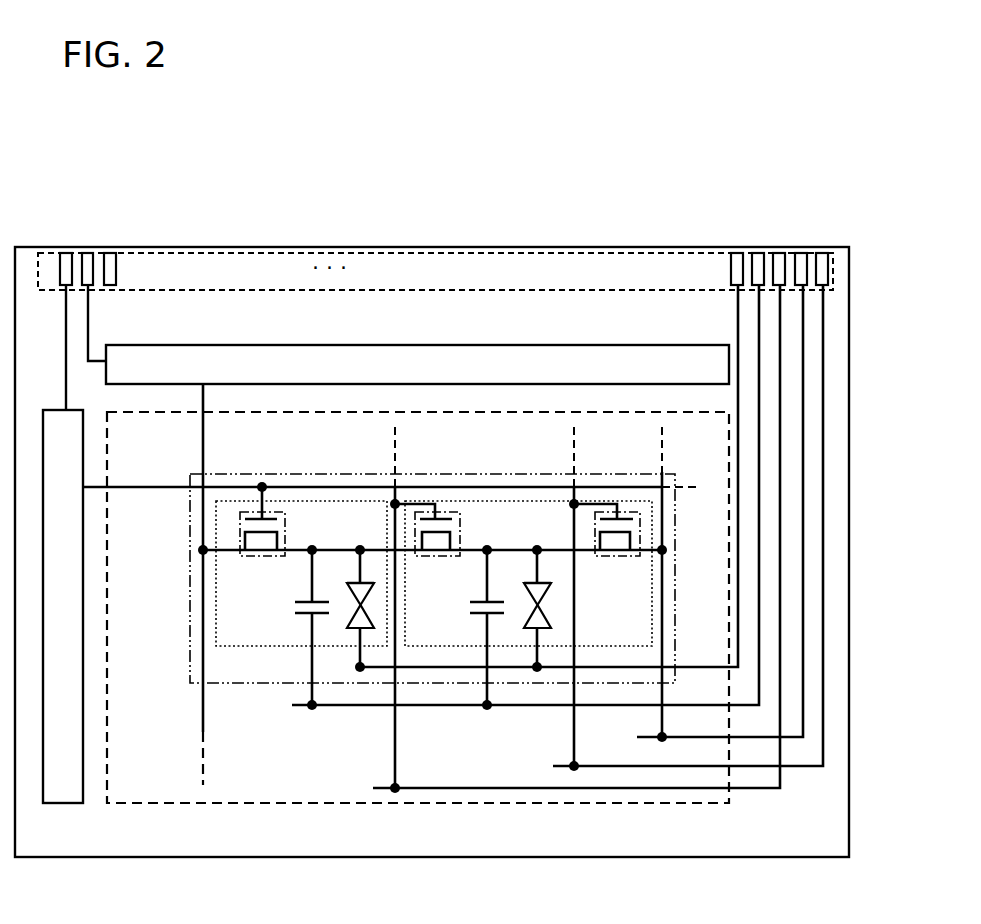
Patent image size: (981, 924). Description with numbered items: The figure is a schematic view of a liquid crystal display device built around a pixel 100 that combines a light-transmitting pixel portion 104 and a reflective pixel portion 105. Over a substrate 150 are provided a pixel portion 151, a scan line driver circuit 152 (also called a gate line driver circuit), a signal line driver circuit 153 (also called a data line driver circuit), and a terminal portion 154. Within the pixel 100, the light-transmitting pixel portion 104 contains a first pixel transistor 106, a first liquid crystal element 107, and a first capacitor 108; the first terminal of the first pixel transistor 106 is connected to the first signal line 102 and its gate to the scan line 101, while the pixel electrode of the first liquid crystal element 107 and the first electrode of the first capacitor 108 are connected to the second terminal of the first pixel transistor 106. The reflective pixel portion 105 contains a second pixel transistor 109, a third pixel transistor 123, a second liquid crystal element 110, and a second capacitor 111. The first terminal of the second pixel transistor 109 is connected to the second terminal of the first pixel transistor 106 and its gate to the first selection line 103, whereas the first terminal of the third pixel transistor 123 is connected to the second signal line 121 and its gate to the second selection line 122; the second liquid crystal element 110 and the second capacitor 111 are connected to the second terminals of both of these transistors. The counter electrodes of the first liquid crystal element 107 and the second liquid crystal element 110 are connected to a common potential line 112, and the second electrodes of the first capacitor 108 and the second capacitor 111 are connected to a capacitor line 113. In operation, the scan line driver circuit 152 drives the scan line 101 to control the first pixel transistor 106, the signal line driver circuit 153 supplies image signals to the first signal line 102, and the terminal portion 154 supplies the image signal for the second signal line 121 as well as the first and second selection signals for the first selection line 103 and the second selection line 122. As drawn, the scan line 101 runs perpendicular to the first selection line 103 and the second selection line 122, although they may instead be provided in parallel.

The pixel 100 is at (668, 549).
The scan line 101 is at (154, 489).
The first signal line 102 is at (202, 455).
The first selection line 103 is at (396, 475).
The light-transmitting pixel portion 104 is at (216, 592).
The reflective pixel portion 105 is at (652, 631).
The first pixel transistor 106 is at (282, 511).
The first liquid crystal element 107 is at (357, 632).
The first capacitor 108 is at (313, 597).
The second pixel transistor 109 is at (454, 512).
The second liquid crystal element 110 is at (531, 632).
The second capacitor 111 is at (488, 597).
The common potential line 112 is at (566, 668).
The capacitor line 113 is at (298, 705).
The second signal line 121 is at (666, 494).
The second selection line 122 is at (574, 474).
The third pixel transistor 123 is at (620, 511).
The substrate 150 is at (648, 858).
The pixel portion 151 is at (680, 804).
The scan line driver circuit 152 is at (62, 408).
The signal line driver circuit 153 is at (256, 347).
The terminal portion 154 is at (52, 293).